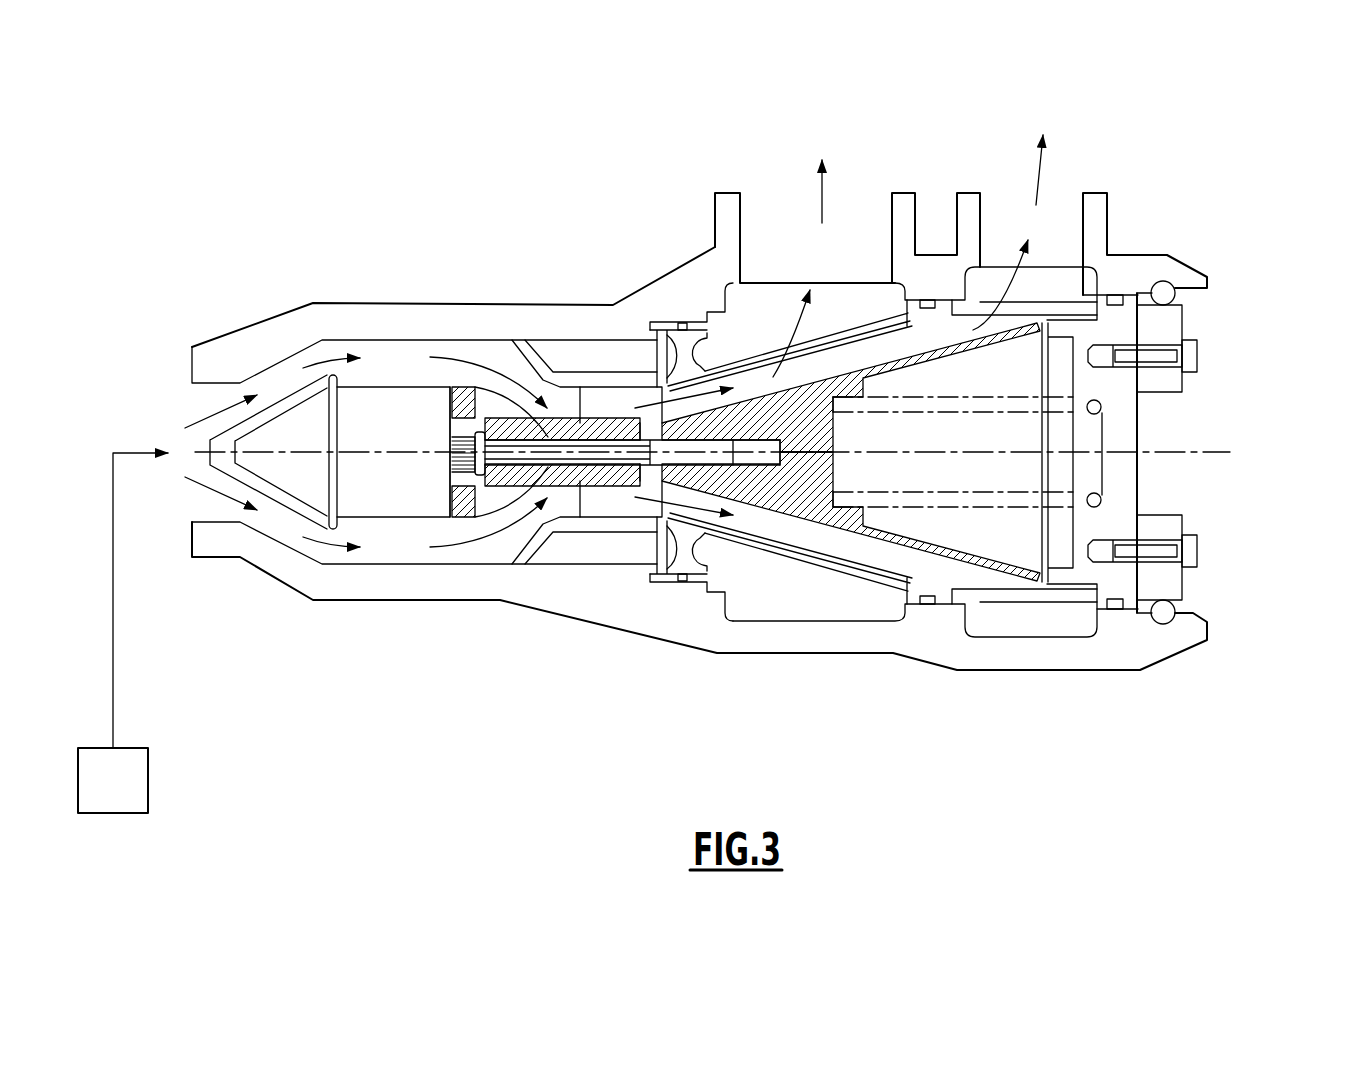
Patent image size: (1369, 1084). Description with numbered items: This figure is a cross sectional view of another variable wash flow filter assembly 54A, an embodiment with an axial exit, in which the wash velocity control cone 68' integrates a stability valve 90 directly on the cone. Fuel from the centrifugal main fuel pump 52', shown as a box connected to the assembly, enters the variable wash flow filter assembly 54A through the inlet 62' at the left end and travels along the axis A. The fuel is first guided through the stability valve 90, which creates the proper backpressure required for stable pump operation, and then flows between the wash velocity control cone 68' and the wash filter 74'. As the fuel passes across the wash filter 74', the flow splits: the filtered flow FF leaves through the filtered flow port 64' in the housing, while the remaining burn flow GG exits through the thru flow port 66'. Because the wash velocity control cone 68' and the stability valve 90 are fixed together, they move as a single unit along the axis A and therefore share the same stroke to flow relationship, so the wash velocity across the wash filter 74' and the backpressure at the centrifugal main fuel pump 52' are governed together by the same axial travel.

The centrifugal main fuel pump 52' is at (157, 633).
The variable wash flow filter assembly 54A is at (1262, 205).
The inlet 62' is at (696, 458).
The filtered flow port 64' is at (847, 205).
The thru flow port 66' is at (1145, 407).
The wash velocity control cone 68' is at (856, 511).
The wash filter 74' is at (873, 452).
The stability valve 90 is at (570, 472).
The axis A is at (1190, 452).
The filtered flow FF is at (826, 196).
The burn flow GG is at (1040, 178).